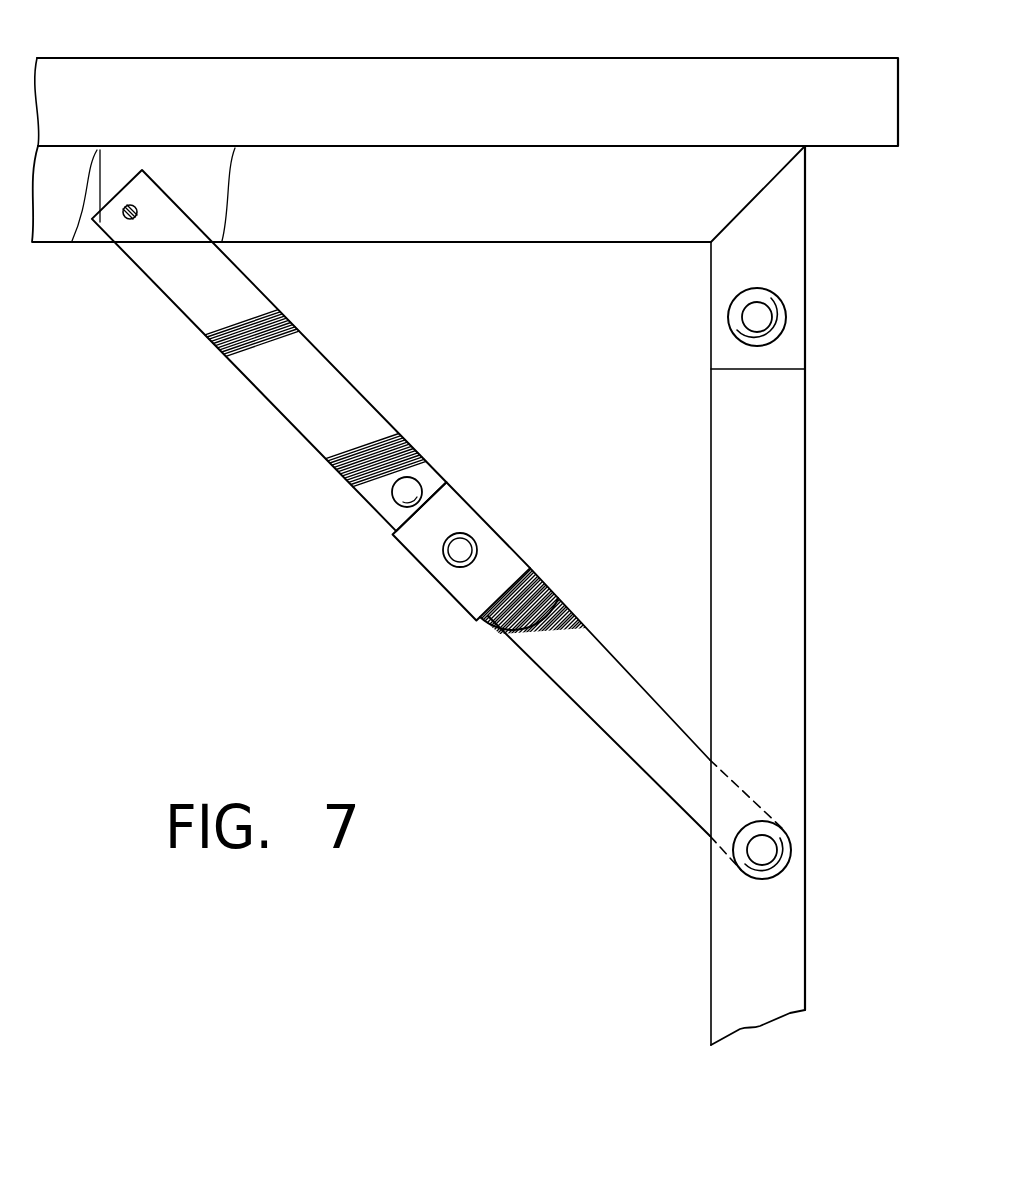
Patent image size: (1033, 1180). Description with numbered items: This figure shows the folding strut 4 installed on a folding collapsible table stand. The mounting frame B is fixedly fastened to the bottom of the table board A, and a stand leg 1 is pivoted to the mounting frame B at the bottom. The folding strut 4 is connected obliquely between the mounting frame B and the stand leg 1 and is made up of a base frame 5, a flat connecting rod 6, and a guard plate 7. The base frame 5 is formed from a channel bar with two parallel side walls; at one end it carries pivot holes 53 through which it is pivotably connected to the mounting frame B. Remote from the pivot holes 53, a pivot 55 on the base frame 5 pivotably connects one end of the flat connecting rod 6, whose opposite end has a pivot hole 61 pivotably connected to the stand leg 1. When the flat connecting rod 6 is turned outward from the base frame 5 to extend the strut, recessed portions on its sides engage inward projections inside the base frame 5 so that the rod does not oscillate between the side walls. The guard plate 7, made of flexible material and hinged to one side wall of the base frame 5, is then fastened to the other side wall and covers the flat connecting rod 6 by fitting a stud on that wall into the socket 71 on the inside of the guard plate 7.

The table board A is at (493, 88).
The mounting frame B is at (648, 213).
The stand leg 1 is at (743, 417).
The folding strut 4 is at (425, 575).
The base frame 5 is at (365, 422).
The pivot hole 53 is at (120, 222).
The pivot 55 is at (417, 475).
The flat connecting rod 6 is at (607, 680).
The pivot hole 61 is at (745, 858).
The guard plate 7 is at (519, 600).
The socket 71 is at (463, 557).